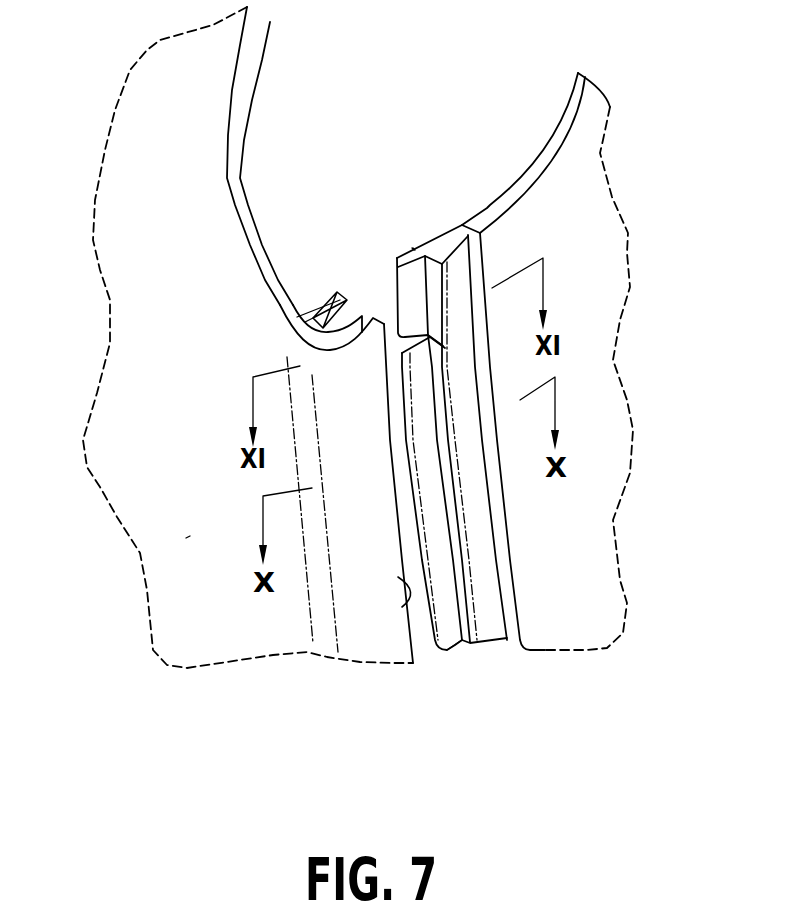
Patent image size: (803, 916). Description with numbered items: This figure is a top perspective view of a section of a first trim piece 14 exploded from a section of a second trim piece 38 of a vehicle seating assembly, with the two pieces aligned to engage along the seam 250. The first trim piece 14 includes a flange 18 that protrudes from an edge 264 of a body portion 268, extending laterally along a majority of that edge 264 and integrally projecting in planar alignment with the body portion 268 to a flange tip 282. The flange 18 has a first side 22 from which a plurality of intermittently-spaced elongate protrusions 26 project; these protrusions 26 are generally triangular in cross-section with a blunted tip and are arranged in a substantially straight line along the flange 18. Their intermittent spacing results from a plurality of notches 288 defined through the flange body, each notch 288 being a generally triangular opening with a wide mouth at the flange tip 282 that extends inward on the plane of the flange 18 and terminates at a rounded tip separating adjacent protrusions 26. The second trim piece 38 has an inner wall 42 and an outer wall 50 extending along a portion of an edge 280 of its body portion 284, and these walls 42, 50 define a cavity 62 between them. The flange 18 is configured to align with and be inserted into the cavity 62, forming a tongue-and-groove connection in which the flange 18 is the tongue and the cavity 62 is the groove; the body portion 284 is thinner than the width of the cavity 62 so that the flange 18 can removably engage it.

The first trim piece 14 is at (600, 275).
The flange 18 is at (409, 221).
The first side 22 is at (447, 610).
The intermittently-spaced elongate protrusions 26 is at (520, 640).
The second trim piece 38 is at (166, 425).
The inner wall 42 is at (320, 307).
The outer wall 50 is at (360, 320).
The cavity 62 is at (308, 314).
The seam 250 is at (458, 685).
The edge 264 is at (473, 248).
The body portion 268 is at (535, 503).
The edge 280 is at (412, 590).
The flange tip 282 is at (388, 274).
The body portion 284 is at (413, 248).
The notches 288 is at (400, 353).